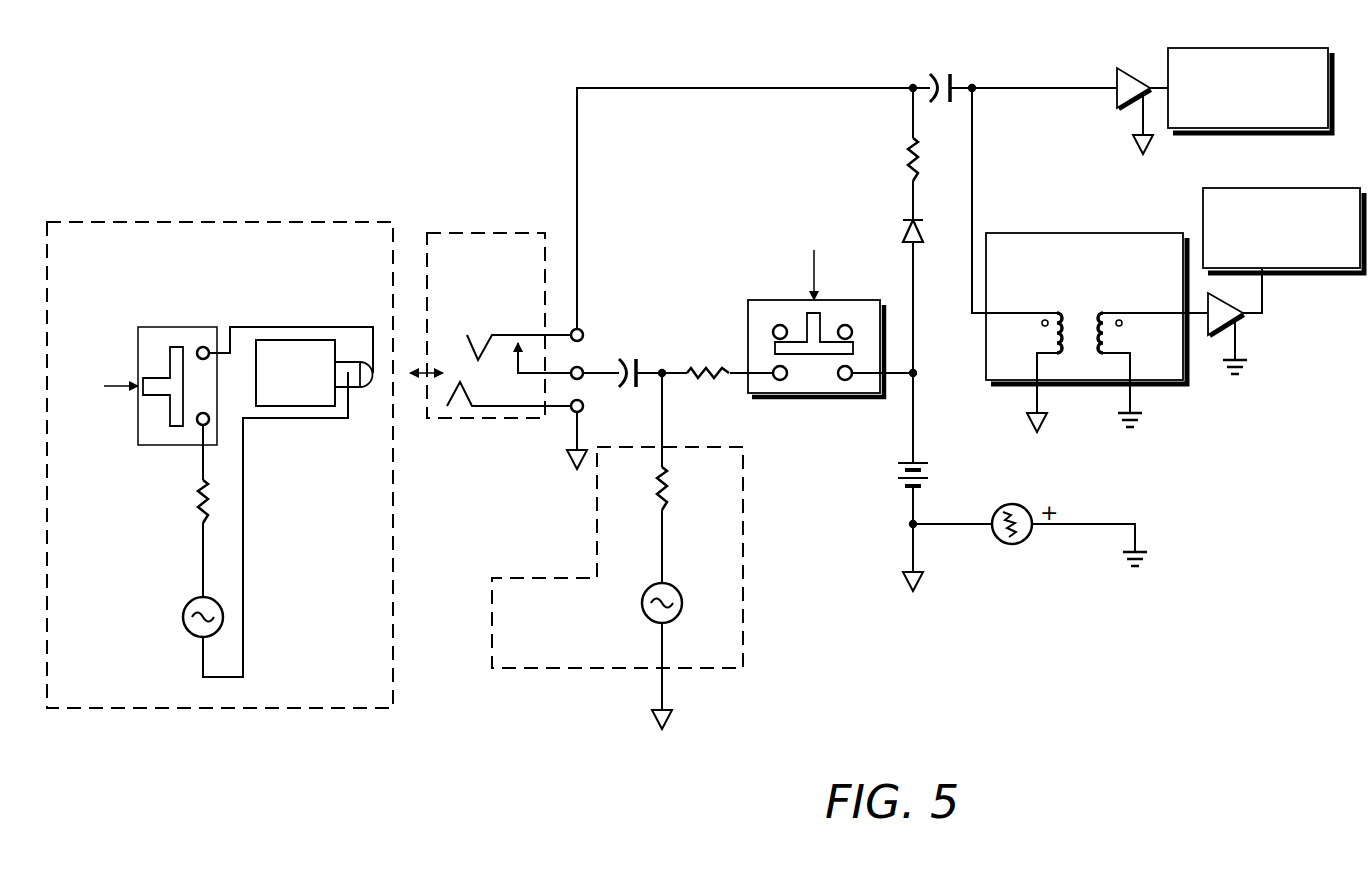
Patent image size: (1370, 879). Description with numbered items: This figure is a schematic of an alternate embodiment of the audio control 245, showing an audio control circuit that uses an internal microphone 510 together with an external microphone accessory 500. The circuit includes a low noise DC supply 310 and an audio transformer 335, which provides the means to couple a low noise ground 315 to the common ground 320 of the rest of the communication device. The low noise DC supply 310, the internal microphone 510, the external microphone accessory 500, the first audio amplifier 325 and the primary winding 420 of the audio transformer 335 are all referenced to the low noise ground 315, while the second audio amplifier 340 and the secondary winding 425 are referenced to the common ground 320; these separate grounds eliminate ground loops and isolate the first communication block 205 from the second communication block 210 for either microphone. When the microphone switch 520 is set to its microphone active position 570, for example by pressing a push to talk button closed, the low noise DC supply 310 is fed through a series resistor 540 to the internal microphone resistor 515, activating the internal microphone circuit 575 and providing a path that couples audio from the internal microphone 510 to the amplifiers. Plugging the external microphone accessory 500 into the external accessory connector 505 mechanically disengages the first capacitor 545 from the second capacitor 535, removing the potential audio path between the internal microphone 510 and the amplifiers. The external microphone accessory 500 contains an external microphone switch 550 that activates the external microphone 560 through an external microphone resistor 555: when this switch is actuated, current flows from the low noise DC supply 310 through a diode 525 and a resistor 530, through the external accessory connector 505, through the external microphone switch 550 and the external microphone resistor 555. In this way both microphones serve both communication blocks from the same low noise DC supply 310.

The first communication block 205 is at (1170, 48).
The second communication block 210 is at (1205, 188).
The audio control 245 is at (466, 741).
The low noise DC supply 310 is at (900, 470).
The low noise ground 315 is at (567, 453).
The common ground 320 is at (1143, 418).
The first audio amplifier 325 is at (1120, 70).
The audio transformer 335 is at (986, 233).
The second audio amplifier 340 is at (1240, 315).
The primary winding 420 is at (1040, 335).
The secondary winding 425 is at (1125, 337).
The external microphone accessory 500 is at (393, 710).
The external accessory connector 505 is at (427, 418).
The internal microphone 510 is at (747, 447).
The internal microphone resistor 515 is at (657, 482).
The microphone switch 520 is at (752, 300).
The diode 525 is at (905, 240).
The resistor 530 is at (907, 147).
The second capacitor 535 is at (943, 68).
The series resistor 540 is at (713, 357).
The first capacitor 545 is at (617, 358).
The external microphone switch 550 is at (138, 327).
The external microphone resistor 555 is at (200, 493).
The external microphone 560 is at (183, 630).
The microphone active position 570 is at (847, 382).
The internal microphone circuit 575 is at (683, 603).